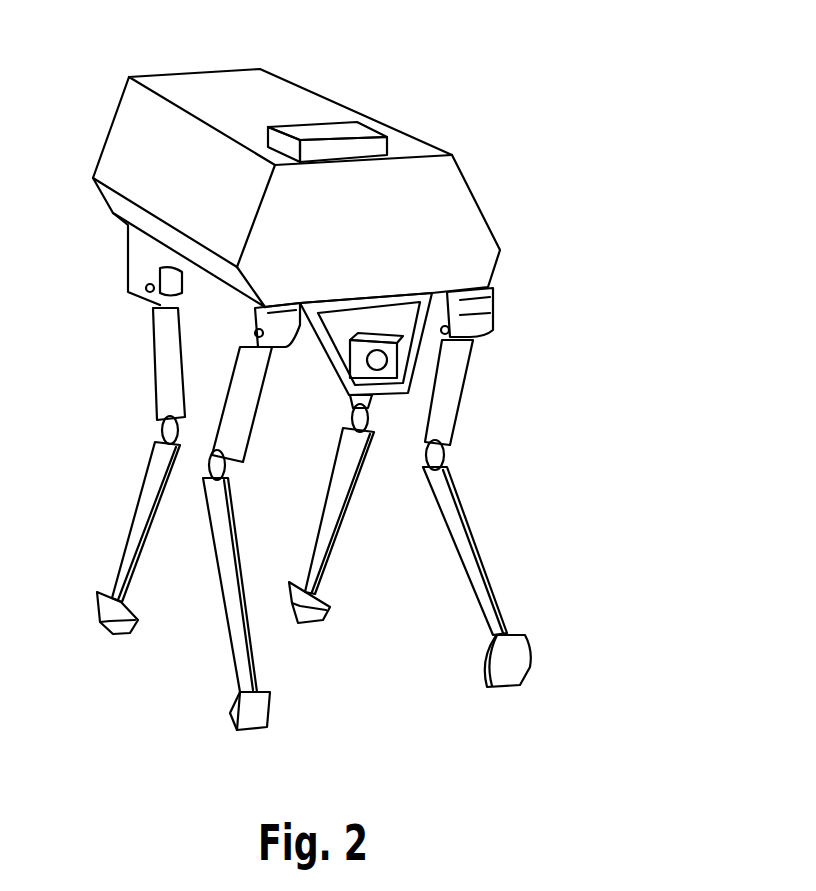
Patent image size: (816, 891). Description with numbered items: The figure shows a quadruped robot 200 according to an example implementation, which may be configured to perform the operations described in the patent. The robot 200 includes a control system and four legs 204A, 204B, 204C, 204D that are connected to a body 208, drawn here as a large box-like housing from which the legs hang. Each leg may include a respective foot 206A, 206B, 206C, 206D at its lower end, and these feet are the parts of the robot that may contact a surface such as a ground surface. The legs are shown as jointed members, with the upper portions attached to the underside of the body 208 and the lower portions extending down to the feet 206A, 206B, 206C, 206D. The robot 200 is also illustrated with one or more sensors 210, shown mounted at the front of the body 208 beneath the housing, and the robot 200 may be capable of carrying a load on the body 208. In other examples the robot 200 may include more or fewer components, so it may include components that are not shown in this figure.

The quadruped robot 200 is at (339, 390).
The body 208 is at (497, 263).
The sensor 210 is at (357, 333).
The leg 204A is at (123, 487).
The leg 204B is at (289, 544).
The leg 204C is at (361, 509).
The leg 204D is at (528, 516).
The foot 206A is at (123, 632).
The foot 206B is at (272, 718).
The foot 206C is at (330, 604).
The foot 206D is at (530, 667).